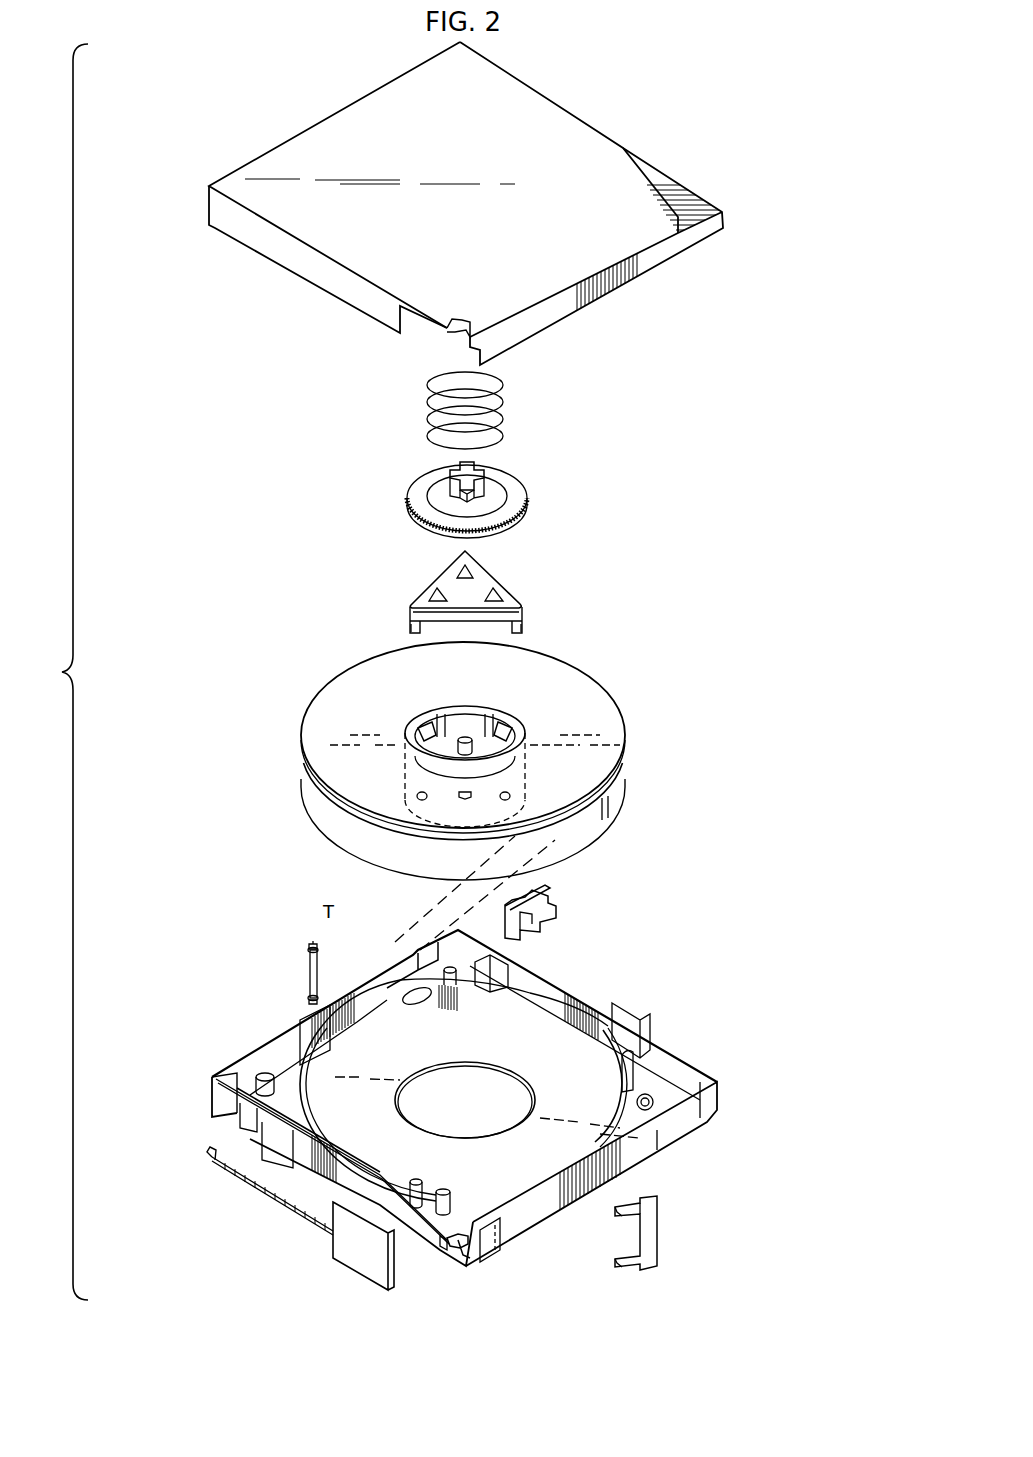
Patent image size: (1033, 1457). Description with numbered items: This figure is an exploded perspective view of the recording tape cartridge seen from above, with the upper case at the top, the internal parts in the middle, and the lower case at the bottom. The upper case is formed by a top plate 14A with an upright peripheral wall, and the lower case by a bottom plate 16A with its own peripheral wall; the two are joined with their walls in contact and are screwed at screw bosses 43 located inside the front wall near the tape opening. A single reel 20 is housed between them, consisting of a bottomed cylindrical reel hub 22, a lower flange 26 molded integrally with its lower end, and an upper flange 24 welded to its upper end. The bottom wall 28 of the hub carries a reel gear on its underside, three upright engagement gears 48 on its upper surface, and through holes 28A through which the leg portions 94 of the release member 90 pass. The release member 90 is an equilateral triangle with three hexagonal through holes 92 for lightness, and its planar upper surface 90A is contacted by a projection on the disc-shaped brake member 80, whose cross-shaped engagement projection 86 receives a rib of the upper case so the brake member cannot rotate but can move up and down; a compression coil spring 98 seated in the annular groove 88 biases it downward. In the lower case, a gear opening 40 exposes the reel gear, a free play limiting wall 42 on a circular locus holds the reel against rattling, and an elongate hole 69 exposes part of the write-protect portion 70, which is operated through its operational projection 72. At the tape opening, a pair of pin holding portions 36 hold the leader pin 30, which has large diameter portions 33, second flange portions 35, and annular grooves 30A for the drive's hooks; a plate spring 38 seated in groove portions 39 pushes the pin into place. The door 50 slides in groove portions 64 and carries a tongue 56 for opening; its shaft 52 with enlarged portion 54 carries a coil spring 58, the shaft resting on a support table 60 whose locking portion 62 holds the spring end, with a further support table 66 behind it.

The top plate 14A is at (568, 135).
The pin holding portions 36 is at (445, 333).
The compression coil spring 98 is at (503, 388).
The brake member 80 is at (473, 485).
The engagement projection 86 is at (490, 482).
The annular groove 88 is at (432, 497).
The release member 90 is at (466, 585).
The planar upper surface 90A is at (447, 582).
The through holes 92 is at (478, 570).
The leg portions 94 is at (406, 633).
The reel 20 is at (476, 746).
The reel hub 22 is at (490, 706).
The upper flange 24 is at (582, 700).
The lower flange 26 is at (628, 795).
The bottom wall 28 is at (439, 720).
The through holes 28A is at (476, 706).
The engagement gears 48 is at (428, 716).
The operational projection 72 is at (540, 888).
The write-protect portion 70 is at (561, 904).
The bottom plate 16A is at (578, 1050).
The gear opening 40 is at (495, 1080).
The free play limiting wall 42 is at (616, 1040).
The elongate hole 69 is at (413, 1004).
The support table 60 is at (298, 1118).
The locking portion 62 is at (265, 1092).
The support table 66 is at (240, 1122).
The groove portions 64 is at (436, 1252).
The screw bosses 43 is at (500, 1228).
The groove portions 39 is at (500, 1245).
The second flange portions 35 is at (312, 940).
The large diameter portions 33 is at (310, 944).
The leader pin 30 is at (270, 946).
The annular grooves 30A is at (306, 950).
The door 50 is at (313, 1222).
The tongue 56 is at (370, 1276).
The shaft 52 is at (244, 1192).
The enlarged portion 54 is at (208, 1160).
The coil spring 58 is at (232, 1180).
The plate spring 38 is at (650, 1240).